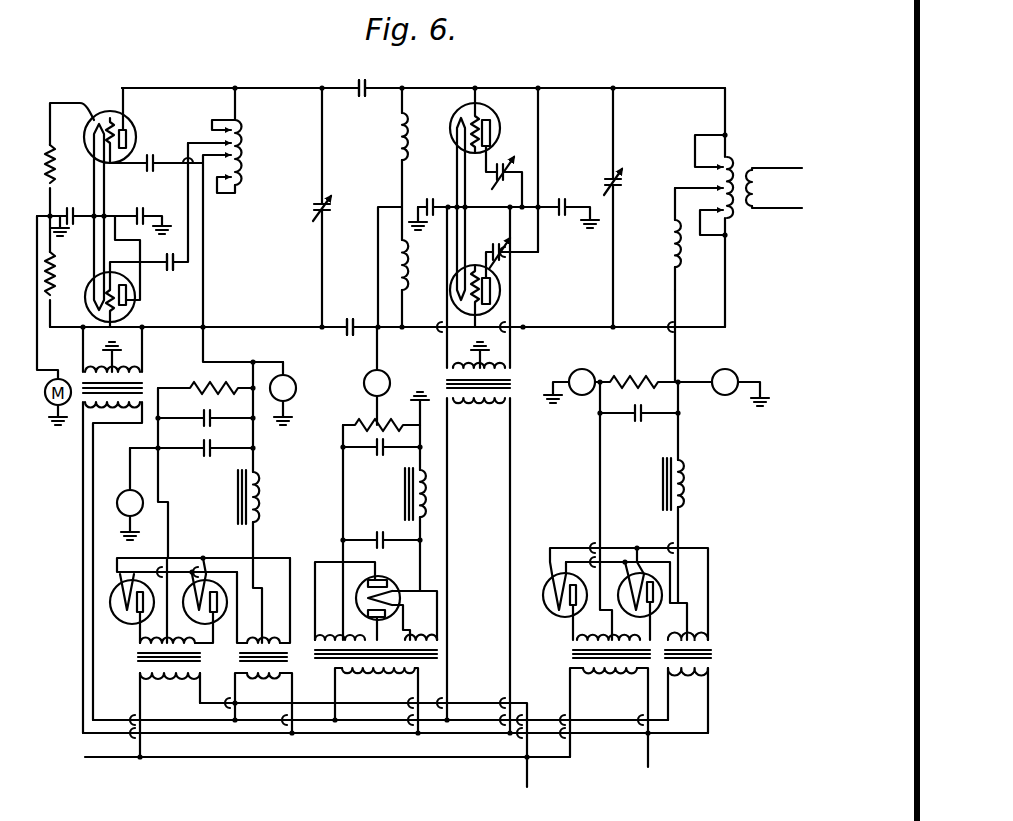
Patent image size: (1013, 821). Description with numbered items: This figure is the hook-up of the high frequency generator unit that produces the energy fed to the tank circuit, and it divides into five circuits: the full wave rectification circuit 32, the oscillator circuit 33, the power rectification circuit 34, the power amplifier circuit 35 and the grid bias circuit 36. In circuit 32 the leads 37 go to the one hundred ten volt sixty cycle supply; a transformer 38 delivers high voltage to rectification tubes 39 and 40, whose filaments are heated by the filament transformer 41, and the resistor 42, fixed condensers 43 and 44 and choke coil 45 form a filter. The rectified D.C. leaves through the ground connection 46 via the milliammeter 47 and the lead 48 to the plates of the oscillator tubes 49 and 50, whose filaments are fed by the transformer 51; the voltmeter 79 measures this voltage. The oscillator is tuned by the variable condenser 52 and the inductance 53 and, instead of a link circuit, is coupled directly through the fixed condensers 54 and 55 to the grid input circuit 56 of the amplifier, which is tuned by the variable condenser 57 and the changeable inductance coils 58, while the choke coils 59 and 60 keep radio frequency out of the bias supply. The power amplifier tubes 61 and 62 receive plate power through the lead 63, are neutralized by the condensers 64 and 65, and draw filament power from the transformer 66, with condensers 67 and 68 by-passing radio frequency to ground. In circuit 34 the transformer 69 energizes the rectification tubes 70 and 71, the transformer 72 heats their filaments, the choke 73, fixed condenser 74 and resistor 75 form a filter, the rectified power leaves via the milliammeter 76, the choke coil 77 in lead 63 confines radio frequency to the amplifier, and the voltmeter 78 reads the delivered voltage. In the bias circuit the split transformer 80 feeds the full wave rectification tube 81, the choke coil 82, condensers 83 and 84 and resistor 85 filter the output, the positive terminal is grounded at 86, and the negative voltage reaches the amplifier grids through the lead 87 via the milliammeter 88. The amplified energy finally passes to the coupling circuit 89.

The full wave rectification circuit 32 is at (273, 578).
The oscillator circuit 33 is at (172, 106).
The power rectification circuit 34 is at (700, 579).
The power amplifier circuit 35 is at (492, 104).
The grid bias circuit 36 is at (352, 492).
The leads 37 is at (200, 700).
The transformer 38 is at (138, 658).
The rectification tube 39 is at (110, 604).
The rectification tube 40 is at (226, 566).
The filament transformer 41 is at (288, 656).
The resistor 42 is at (198, 384).
The fixed condenser 43 is at (203, 428).
The fixed condenser 44 is at (207, 459).
The choke coil 45 is at (264, 500).
The ground connection 46 is at (128, 479).
The milliammeter 47 is at (117, 503).
The lead 48 is at (206, 256).
The oscillator tube 49 is at (97, 115).
The oscillator tube 50 is at (137, 306).
The filament transformer 51 is at (82, 370).
The variable condenser 52 is at (312, 195).
The inductance 53 is at (243, 150).
The fixed condenser 54 is at (342, 335).
The fixed condenser 55 is at (352, 86).
The grid input circuit 56 is at (399, 172).
The variable condenser 57 is at (621, 188).
The inductance coils 58 is at (735, 159).
The choke coil 59 is at (396, 135).
The choke coil 60 is at (410, 275).
The power amplifier tube 61 is at (456, 122).
The power amplifier tube 62 is at (500, 290).
The lead 63 is at (673, 295).
The neutralizing condenser 64 is at (505, 158).
The neutralizing condenser 65 is at (490, 243).
The transformer 66 is at (520, 376).
The condenser 67 is at (438, 201).
The condenser 68 is at (557, 200).
The transformer 69 is at (574, 654).
The power supply rectification tube 70 is at (548, 616).
The power supply rectification tube 71 is at (655, 599).
The transformer 72 is at (715, 655).
The choke 73 is at (688, 487).
The fixed condenser 74 is at (634, 420).
The resistor 75 is at (640, 375).
The milliammeter 76 is at (579, 398).
The choke coil 77 is at (672, 242).
The voltmeter 78 is at (736, 373).
The voltmeter 79 is at (296, 381).
The split transformer 80 is at (440, 663).
The full wave rectification tube 81 is at (367, 599).
The choke coil 82 is at (430, 491).
The condenser 83 is at (378, 456).
The condenser 84 is at (376, 533).
The resistor 85 is at (357, 422).
The ground 86 is at (422, 421).
The lead 87 is at (376, 238).
The milliammeter 88 is at (386, 373).
The coupling circuit 89 is at (762, 213).